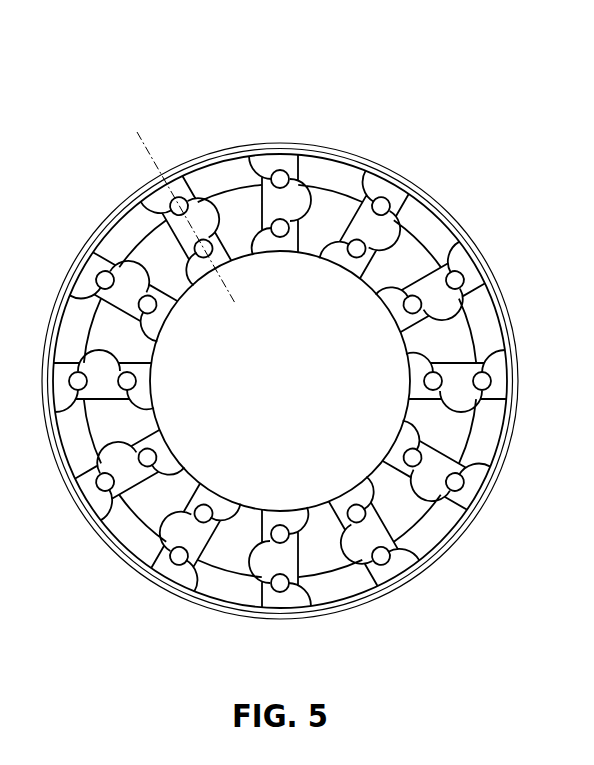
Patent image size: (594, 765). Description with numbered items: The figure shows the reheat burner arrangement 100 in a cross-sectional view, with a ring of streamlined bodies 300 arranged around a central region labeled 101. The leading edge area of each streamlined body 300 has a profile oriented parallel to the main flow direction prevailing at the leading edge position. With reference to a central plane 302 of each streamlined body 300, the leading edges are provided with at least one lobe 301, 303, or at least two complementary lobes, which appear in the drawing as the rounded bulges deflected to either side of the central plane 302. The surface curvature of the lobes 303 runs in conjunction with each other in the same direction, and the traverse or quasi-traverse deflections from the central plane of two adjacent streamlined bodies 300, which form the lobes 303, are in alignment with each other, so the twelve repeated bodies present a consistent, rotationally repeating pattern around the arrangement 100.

The reheat burner arrangement 100 is at (211, 44).
The central hub 101 is at (262, 392).
The streamlined body 300 is at (467, 267).
The lobe 301 is at (375, 230).
The central plane 302 is at (145, 140).
The lobe 303 is at (317, 203).